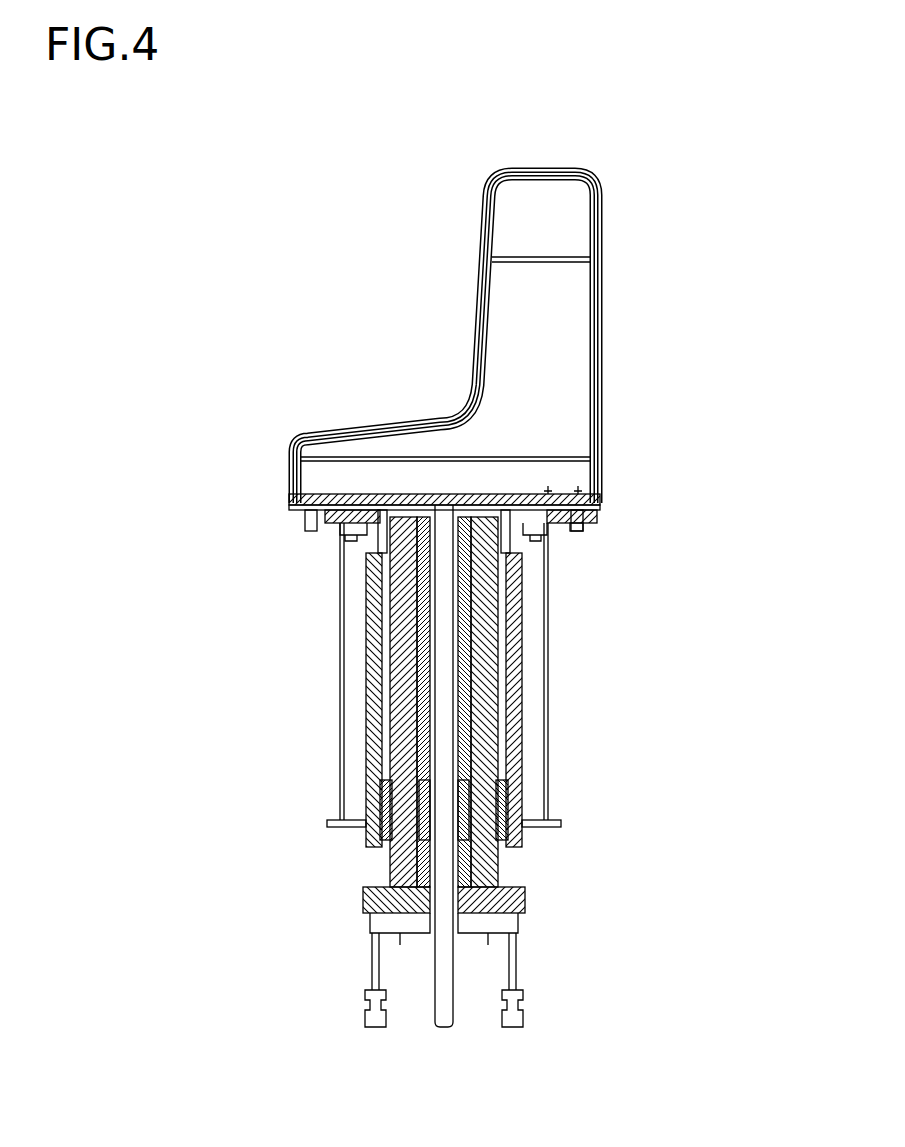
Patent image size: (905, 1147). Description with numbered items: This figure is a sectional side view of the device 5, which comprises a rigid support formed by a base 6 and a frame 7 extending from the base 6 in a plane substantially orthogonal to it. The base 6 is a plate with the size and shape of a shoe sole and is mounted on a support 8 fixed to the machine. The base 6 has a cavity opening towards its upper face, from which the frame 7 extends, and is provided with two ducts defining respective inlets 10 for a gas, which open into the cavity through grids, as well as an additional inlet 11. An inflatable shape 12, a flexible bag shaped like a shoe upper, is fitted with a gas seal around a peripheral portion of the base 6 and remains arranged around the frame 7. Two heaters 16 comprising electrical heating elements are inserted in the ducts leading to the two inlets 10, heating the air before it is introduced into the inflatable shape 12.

The device 5 is at (373, 276).
The base 6 is at (603, 516).
The frame 7 is at (496, 346).
The support 8 is at (548, 680).
The inlets 10 is at (393, 508).
The additional inlet 11 is at (445, 505).
The inflatable shape 12 is at (604, 246).
The heaters 16 is at (398, 650).